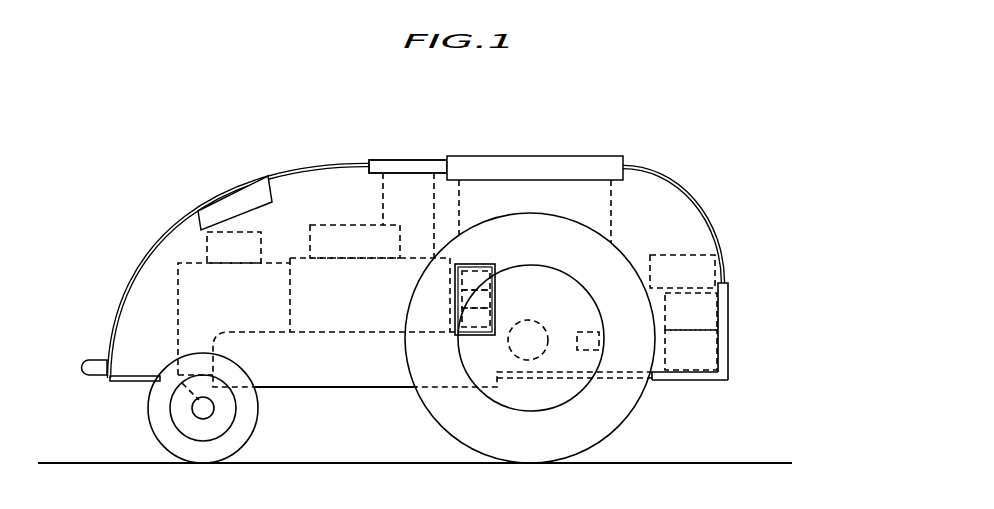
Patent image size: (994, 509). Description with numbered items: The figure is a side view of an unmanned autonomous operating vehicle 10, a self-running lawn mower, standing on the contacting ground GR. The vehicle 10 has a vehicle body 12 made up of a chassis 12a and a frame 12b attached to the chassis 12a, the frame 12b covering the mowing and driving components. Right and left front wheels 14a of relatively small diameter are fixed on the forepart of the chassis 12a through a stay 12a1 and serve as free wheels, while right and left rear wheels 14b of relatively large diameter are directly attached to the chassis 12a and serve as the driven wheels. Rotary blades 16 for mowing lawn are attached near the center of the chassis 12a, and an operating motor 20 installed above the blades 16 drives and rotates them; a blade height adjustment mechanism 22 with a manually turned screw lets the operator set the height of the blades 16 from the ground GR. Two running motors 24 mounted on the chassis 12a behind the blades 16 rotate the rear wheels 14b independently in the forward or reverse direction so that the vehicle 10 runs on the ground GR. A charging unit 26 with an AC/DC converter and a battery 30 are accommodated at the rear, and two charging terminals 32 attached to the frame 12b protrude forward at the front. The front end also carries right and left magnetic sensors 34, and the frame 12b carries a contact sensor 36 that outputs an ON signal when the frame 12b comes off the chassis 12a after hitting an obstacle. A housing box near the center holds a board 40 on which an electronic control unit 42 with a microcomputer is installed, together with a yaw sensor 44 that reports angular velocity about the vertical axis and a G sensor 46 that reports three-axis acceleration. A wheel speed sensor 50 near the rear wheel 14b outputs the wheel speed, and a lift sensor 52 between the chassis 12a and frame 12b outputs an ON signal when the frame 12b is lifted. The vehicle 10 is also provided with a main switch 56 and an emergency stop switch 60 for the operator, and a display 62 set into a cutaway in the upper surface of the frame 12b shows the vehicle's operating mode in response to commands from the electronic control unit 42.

The unmanned autonomous operating vehicle 10 is at (673, 170).
The vehicle body 12 is at (753, 338).
The chassis 12a is at (731, 362).
The stay 12a1 is at (192, 399).
The frame 12b is at (729, 290).
The front wheels 14a is at (157, 434).
The rear wheels 14b is at (434, 438).
The blades 16 is at (333, 372).
The operating motor 20 is at (355, 307).
The blade height adjustment mechanism 22 is at (368, 251).
The running motors 24 is at (541, 327).
The charging unit 26 is at (703, 322).
The battery 30 is at (703, 361).
The charging terminals 32 is at (97, 358).
The magnetic sensors 34 is at (238, 184).
The contact sensor 36 is at (249, 258).
The board 40 is at (498, 281).
The electronic control unit 42 is at (460, 274).
The yaw sensor 44 is at (461, 311).
The G sensor 46 is at (458, 338).
The wheel speed sensor 50 is at (597, 331).
The lift sensor 52 is at (692, 282).
The main switch 56 is at (410, 158).
The emergency stop switch 60 is at (408, 166).
The display 62 is at (535, 155).
The ground GR is at (666, 462).